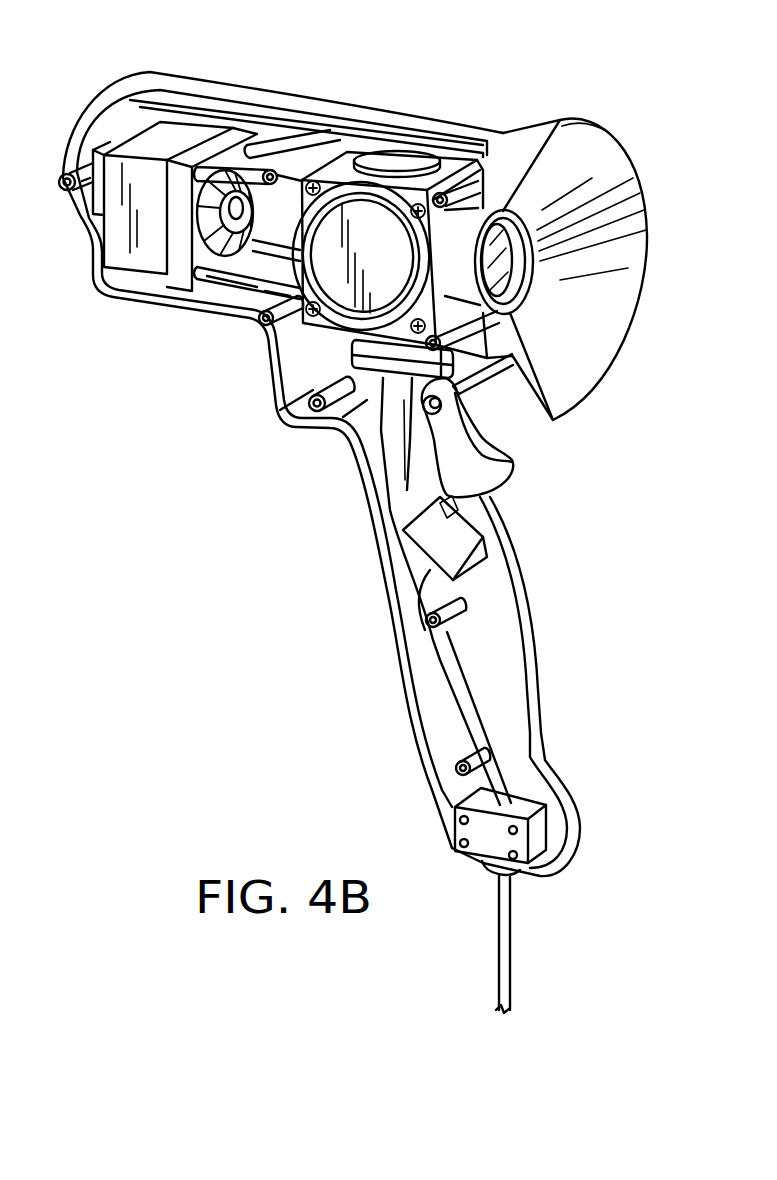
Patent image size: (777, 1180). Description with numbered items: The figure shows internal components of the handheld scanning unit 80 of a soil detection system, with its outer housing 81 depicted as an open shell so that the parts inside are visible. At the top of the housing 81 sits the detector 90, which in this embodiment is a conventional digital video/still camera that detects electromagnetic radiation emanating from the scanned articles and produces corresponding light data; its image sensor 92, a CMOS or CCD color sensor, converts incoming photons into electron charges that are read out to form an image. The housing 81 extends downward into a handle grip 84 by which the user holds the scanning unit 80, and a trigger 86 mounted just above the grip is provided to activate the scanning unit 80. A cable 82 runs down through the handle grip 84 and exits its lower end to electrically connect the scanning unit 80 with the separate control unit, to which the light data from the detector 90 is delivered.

The scanning unit 80 is at (373, 106).
The housing 81 is at (447, 132).
The cable 82 is at (456, 704).
The handle grip 84 is at (537, 650).
The trigger 86 is at (470, 468).
The detector 90 is at (177, 132).
The image sensor 92 is at (224, 220).